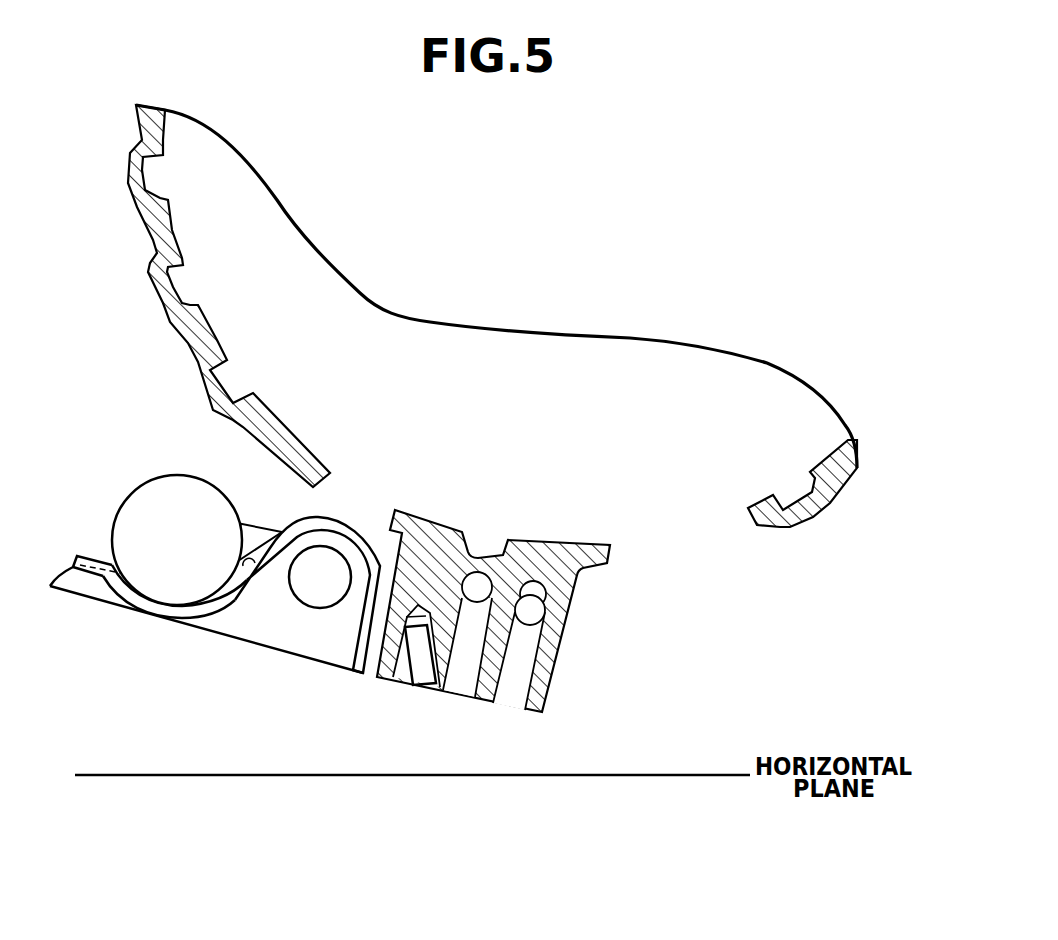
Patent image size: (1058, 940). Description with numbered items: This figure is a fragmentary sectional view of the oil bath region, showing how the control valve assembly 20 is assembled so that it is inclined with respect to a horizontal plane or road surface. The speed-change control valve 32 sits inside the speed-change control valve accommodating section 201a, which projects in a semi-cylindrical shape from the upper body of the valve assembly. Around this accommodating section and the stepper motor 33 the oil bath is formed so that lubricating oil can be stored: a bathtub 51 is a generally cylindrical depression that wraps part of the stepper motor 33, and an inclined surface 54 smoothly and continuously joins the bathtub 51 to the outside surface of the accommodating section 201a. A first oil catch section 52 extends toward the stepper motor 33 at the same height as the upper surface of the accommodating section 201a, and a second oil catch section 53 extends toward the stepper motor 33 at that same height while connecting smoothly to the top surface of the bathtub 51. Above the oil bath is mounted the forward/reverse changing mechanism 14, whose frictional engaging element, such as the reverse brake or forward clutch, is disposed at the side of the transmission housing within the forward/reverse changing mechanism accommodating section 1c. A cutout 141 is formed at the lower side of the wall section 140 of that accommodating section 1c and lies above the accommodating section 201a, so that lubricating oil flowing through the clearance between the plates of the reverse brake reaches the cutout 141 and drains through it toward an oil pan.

The forward/reverse changing mechanism 14 is at (614, 370).
The forward/reverse changing mechanism accommodating section 1c is at (492, 373).
The wall section 140 is at (780, 522).
The cutout 141 is at (333, 476).
The control valve assembly 20 is at (320, 545).
The stepper motor 33 is at (158, 474).
The bathtub 51 is at (163, 592).
The first oil catch section 52 is at (258, 528).
The second oil catch section 53 is at (248, 522).
The inclined surface 54 is at (250, 540).
The speed-change control valve 32 is at (318, 593).
The speed-change control valve accommodating section 201a is at (367, 530).